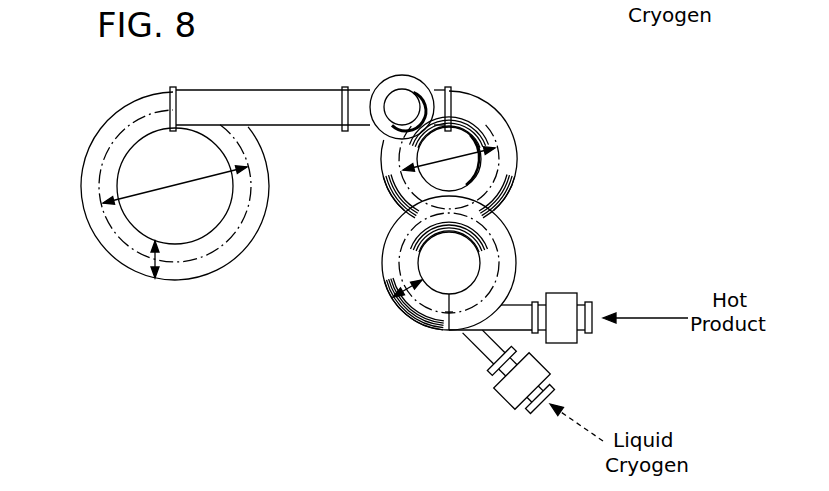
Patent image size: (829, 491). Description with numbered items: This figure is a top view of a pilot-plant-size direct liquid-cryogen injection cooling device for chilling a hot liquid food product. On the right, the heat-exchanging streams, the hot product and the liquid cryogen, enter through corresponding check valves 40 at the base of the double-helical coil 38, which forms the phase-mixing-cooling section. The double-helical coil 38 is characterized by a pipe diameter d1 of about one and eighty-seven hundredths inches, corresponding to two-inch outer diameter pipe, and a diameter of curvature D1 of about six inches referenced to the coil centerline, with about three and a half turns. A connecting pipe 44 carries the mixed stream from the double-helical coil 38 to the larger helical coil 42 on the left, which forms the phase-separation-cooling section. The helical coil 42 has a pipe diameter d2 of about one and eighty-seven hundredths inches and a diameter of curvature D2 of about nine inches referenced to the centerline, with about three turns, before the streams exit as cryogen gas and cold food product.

The double-helical coil 38 is at (513, 184).
The check valve 40 is at (563, 293).
The helical coil 42 is at (104, 121).
The pipe 44 is at (259, 105).
The diameter of curvature D1 is at (465, 152).
The diameter of curvature D2 is at (104, 200).
The pipe diameter d1 is at (406, 287).
The pipe diameter d2 is at (155, 262).